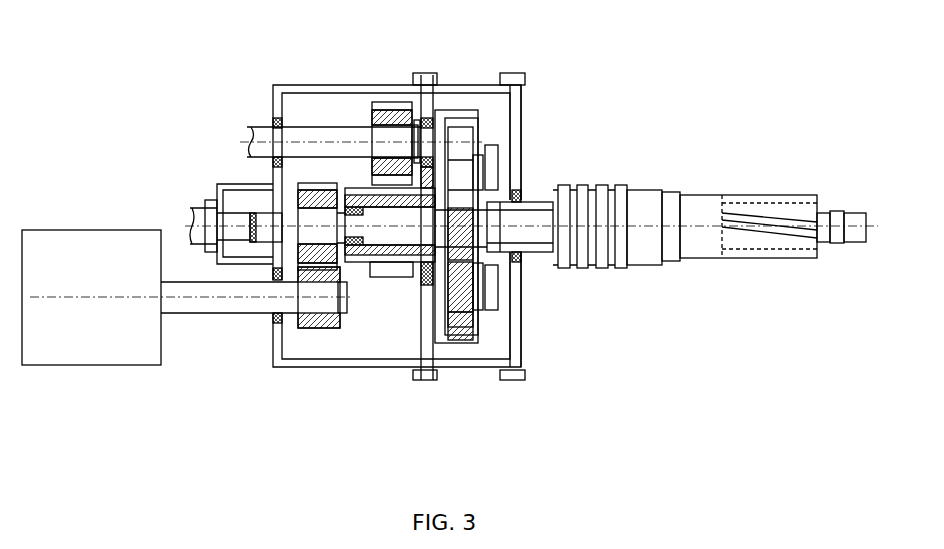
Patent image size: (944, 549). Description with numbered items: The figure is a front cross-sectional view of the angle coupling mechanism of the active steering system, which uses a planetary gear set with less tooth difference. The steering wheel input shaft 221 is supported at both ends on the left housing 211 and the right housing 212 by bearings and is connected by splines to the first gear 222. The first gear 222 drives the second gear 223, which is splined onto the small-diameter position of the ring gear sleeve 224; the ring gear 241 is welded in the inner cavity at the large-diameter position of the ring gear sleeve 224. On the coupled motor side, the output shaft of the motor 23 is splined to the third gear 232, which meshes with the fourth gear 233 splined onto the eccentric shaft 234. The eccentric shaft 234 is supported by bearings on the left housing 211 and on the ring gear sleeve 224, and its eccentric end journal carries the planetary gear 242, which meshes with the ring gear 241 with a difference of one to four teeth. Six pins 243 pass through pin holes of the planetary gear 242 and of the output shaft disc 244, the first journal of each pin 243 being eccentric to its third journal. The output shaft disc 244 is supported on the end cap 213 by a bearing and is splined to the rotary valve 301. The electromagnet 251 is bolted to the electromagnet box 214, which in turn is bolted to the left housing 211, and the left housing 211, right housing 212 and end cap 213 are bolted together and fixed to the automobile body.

The motor 23 is at (125, 312).
The left housing 211 is at (290, 85).
The right housing 212 is at (448, 80).
The end cap 213 is at (518, 78).
The electromagnet box 214 is at (220, 180).
The electromagnet 251 is at (197, 202).
The steering wheel input shaft 221 is at (262, 125).
The first gear 222 is at (378, 106).
The second gear 223 is at (371, 188).
The ring gear sleeve 224 is at (440, 107).
The third gear 232 is at (300, 327).
The fourth gear 233 is at (302, 267).
The eccentric shaft 234 is at (340, 278).
The ring gear 241 is at (452, 342).
The planetary gear 242 is at (460, 307).
The pin 243 is at (493, 290).
The output shaft disc 244 is at (540, 257).
The rotary valve 301 is at (650, 195).